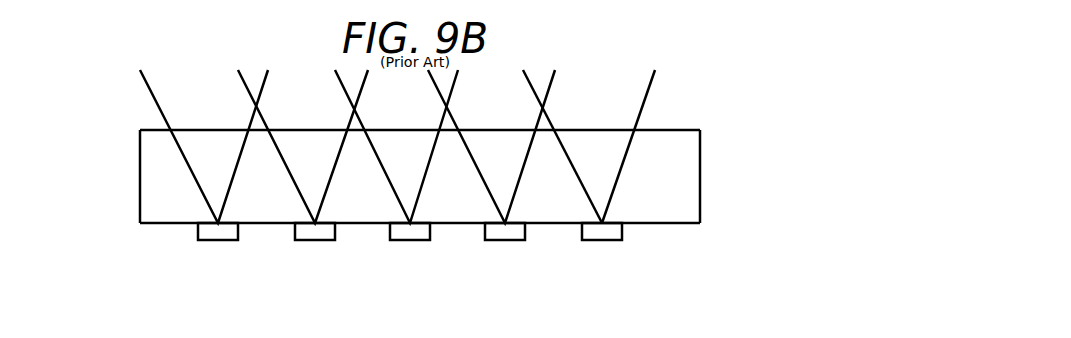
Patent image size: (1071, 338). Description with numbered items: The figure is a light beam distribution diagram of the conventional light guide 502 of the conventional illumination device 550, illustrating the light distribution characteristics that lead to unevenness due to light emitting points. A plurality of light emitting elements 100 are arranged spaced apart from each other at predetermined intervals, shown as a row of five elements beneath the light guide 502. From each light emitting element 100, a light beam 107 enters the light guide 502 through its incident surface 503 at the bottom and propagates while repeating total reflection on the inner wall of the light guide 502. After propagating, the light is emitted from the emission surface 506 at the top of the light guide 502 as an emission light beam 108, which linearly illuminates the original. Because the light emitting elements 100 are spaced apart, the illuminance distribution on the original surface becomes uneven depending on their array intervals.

The illumination device 550 is at (126, 200).
The light emitting element 100 is at (215, 240).
The light beam 107 is at (580, 183).
The emission light beam 108 is at (650, 93).
The light guide 502 is at (678, 177).
The emission surface 506 is at (682, 130).
The incident surface 503 is at (680, 223).